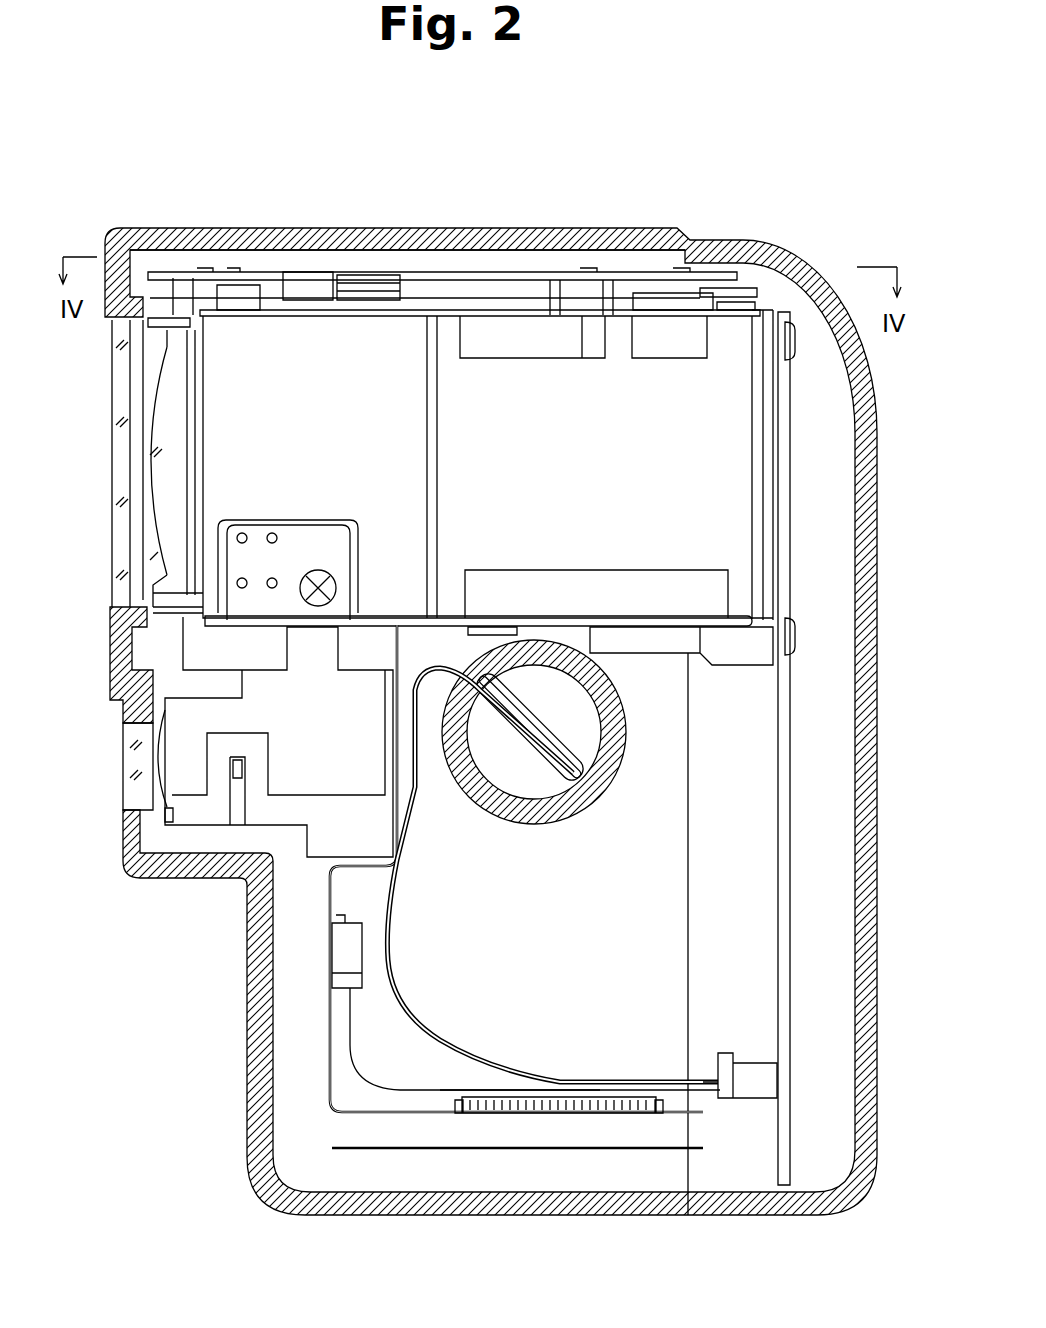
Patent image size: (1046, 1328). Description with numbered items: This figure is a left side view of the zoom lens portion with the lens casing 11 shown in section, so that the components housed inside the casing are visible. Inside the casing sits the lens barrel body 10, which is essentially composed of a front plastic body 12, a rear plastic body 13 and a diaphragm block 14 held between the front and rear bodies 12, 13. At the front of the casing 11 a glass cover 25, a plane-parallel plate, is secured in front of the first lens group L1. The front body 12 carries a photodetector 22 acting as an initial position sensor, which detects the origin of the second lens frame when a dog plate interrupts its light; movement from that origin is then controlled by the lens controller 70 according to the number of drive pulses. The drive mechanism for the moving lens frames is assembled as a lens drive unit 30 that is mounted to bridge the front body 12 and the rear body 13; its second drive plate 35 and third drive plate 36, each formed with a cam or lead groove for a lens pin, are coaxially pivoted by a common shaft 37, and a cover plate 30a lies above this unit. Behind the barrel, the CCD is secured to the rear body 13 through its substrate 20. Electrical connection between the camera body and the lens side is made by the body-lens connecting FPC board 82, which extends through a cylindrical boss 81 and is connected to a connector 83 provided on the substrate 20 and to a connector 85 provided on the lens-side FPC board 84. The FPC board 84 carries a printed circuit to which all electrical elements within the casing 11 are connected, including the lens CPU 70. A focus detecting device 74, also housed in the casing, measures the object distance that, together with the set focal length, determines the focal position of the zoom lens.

The lens barrel body 10 is at (779, 291).
The lens casing 11 is at (260, 1063).
The front plastic body 12 is at (398, 428).
The rear plastic body 13 is at (733, 495).
The diaphragm block 14 is at (440, 468).
The substrate 20 is at (785, 848).
The photodetector (initial position sensor) 22 is at (253, 520).
The glass cover (plane-parallel plate) 25 is at (120, 578).
The lens drive unit 30 is at (675, 228).
The cover plate 30a is at (457, 280).
The second drive plate 35 is at (365, 280).
The third drive plate 36 is at (505, 300).
The common shaft 37 is at (412, 302).
The lens controller (lens CPU) 70 is at (600, 1095).
The focus detecting device 74 is at (188, 780).
The cylindrical boss 81 is at (582, 797).
The body-lens connecting FPC board 82 is at (353, 1047).
The connector 83 is at (757, 1085).
The FPC board on the lens side 84 is at (316, 540).
The connector 85 is at (338, 950).
The first lens group L1 is at (158, 515).